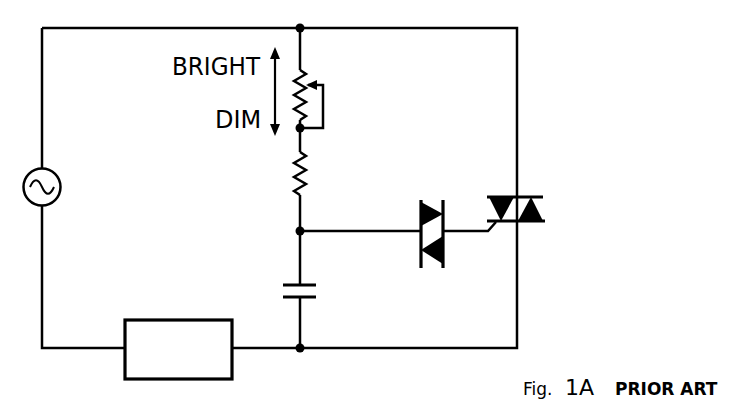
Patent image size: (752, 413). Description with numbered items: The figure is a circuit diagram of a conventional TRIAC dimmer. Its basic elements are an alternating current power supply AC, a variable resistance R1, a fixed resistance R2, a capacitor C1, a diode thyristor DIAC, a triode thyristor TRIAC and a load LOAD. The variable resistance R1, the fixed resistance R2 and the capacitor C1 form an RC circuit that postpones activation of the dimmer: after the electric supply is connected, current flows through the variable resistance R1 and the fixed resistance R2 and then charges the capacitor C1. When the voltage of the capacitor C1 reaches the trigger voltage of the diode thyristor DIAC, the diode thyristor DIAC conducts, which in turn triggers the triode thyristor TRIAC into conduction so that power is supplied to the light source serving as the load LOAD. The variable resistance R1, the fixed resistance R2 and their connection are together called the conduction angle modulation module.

The AC power supply AC is at (64, 187).
The variable resistance R1 is at (334, 91).
The fixed resistance R2 is at (324, 170).
The capacitor C1 is at (321, 278).
The diode thyristor DIAC is at (381, 218).
The triode thyristor TRIAC is at (533, 213).
The load LOAD is at (178, 349).